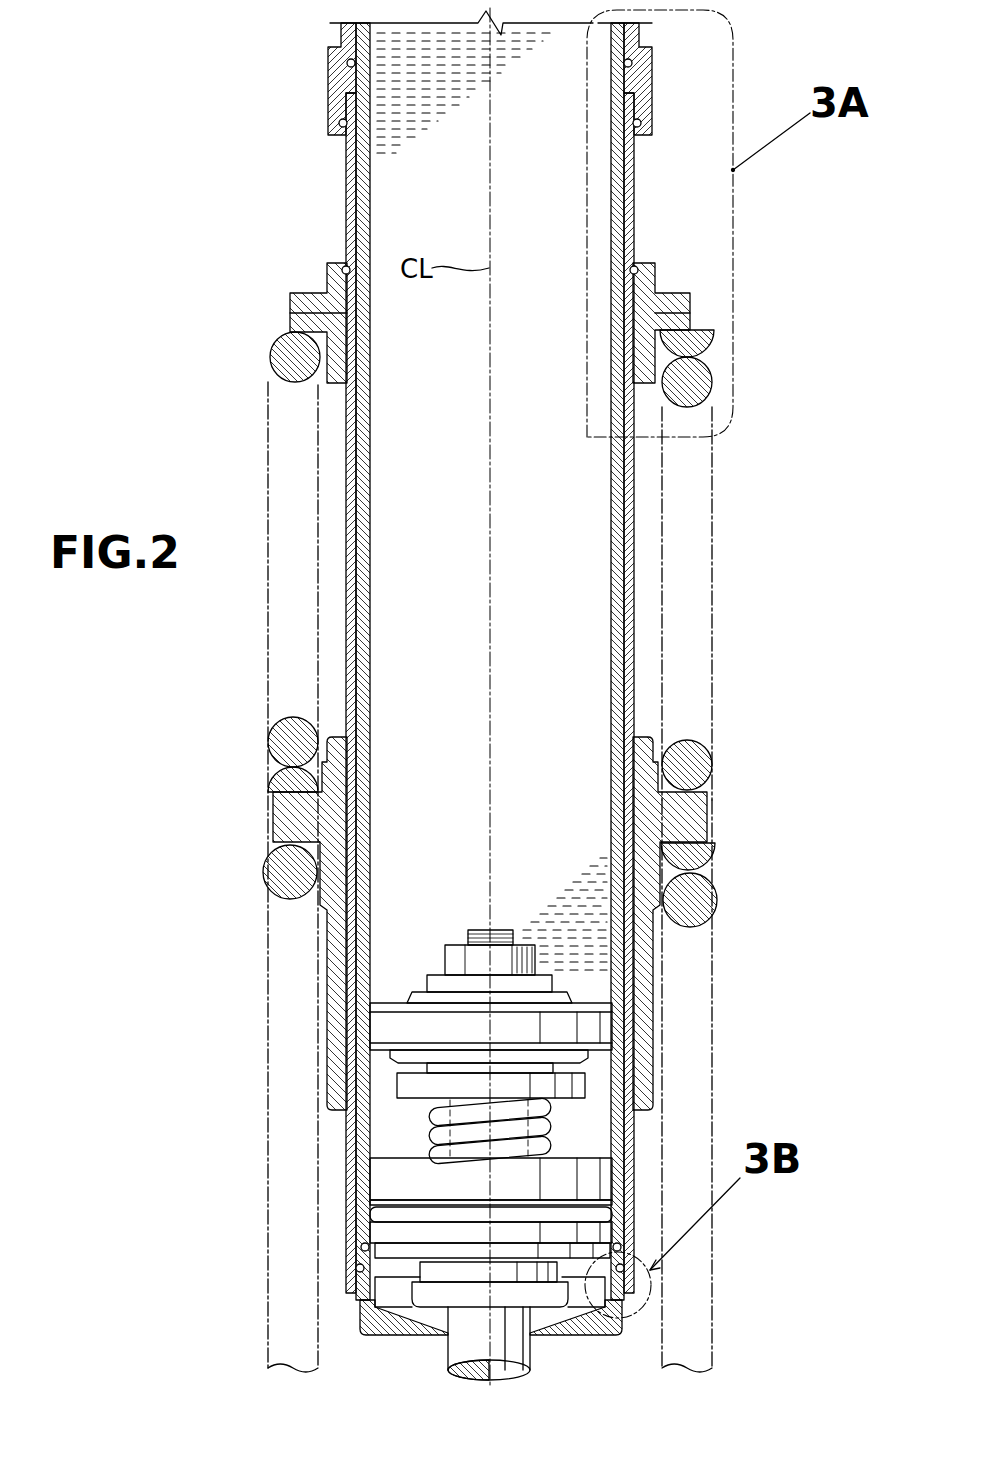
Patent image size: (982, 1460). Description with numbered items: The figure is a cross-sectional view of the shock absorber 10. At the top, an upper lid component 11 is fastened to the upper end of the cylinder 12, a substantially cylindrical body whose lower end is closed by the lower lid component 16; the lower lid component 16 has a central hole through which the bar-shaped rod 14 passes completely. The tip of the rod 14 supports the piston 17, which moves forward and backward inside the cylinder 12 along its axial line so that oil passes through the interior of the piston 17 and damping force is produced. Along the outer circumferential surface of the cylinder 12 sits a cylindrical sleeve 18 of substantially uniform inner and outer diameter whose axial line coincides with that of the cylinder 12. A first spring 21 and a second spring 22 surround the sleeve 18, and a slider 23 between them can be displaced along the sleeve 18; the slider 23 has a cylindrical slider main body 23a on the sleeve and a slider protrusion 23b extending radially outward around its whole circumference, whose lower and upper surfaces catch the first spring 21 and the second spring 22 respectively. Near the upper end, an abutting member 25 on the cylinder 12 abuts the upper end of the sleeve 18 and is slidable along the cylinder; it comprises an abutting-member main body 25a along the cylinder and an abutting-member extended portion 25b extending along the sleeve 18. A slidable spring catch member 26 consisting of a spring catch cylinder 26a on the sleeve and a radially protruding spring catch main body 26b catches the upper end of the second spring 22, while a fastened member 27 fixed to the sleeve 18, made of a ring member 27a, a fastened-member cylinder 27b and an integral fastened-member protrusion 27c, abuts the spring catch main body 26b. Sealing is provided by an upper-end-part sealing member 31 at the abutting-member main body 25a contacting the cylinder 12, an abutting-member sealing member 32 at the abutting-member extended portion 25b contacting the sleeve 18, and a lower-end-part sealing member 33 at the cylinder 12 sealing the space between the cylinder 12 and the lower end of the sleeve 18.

The shock absorber 10 is at (135, 220).
The upper lid component 11 is at (337, 27).
The cylinder 12 is at (611, 570).
The rod 14 is at (531, 1351).
The lower lid component 16 is at (360, 1313).
The piston 17 is at (392, 1031).
The sleeve 18 is at (345, 622).
The first spring 21 is at (715, 1062).
The second spring 22 is at (712, 490).
The slider 23 is at (758, 923).
The slider main body 23a is at (742, 915).
The slider protrusion 23b is at (710, 820).
The abutting member 25 is at (279, 658).
The abutting-member main body 25a is at (366, 77).
The abutting-member extended portion 25b is at (339, 122).
The spring catch member 26 is at (232, 341).
The spring catch cylinder 26a is at (307, 360).
The spring catch main body 26b is at (288, 312).
The fastened member 27 is at (755, 305).
The ring member 27a is at (640, 266).
The fastened-member cylinder 27b is at (660, 280).
The fastened-member protrusion 27c is at (740, 356).
The upper-end-part sealing member 31 is at (631, 63).
The abutting-member sealing member 32 is at (640, 122).
The lower-end-part sealing member 33 is at (357, 1266).